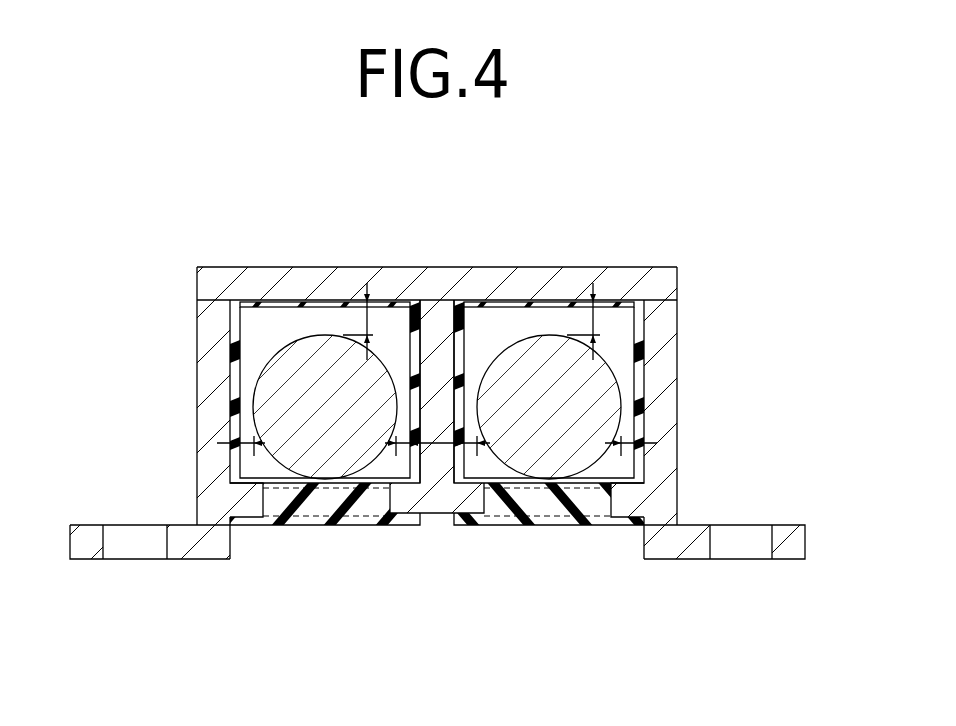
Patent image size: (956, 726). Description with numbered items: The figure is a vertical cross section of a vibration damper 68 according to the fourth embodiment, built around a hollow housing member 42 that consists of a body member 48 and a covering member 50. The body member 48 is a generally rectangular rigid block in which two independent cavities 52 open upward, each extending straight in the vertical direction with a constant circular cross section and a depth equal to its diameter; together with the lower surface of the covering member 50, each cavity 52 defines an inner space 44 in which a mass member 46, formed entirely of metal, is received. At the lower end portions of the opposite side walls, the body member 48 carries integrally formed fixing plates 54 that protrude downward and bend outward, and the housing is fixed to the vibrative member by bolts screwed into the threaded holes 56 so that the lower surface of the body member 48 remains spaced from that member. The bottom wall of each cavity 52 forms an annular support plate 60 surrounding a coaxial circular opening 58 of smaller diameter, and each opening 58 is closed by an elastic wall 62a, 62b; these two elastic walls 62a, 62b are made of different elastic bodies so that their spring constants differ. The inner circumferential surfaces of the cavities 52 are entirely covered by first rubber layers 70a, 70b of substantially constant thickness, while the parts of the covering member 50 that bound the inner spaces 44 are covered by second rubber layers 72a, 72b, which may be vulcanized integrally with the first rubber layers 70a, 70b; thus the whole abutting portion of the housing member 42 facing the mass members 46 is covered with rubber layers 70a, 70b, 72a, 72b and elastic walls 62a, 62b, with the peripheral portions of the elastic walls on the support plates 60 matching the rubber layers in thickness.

The housing member 42 is at (446, 393).
The inner space 44 is at (332, 328).
The mass member 46 is at (264, 353).
The body member 48 is at (662, 408).
The covering member 50 is at (405, 284).
The cavity 52 is at (242, 332).
The fixing plate 54 is at (188, 545).
The threaded hole 56 is at (103, 540).
The circular opening 58 is at (377, 498).
The annular support plate 60 is at (252, 497).
The elastic wall 62a is at (537, 503).
The elastic wall 62b is at (325, 503).
The vibration damper 68 is at (446, 393).
The first rubber layer 70a is at (645, 333).
The first rubber layer 70b is at (233, 383).
The second rubber layer 72a is at (545, 302).
The second rubber layer 72b is at (320, 302).